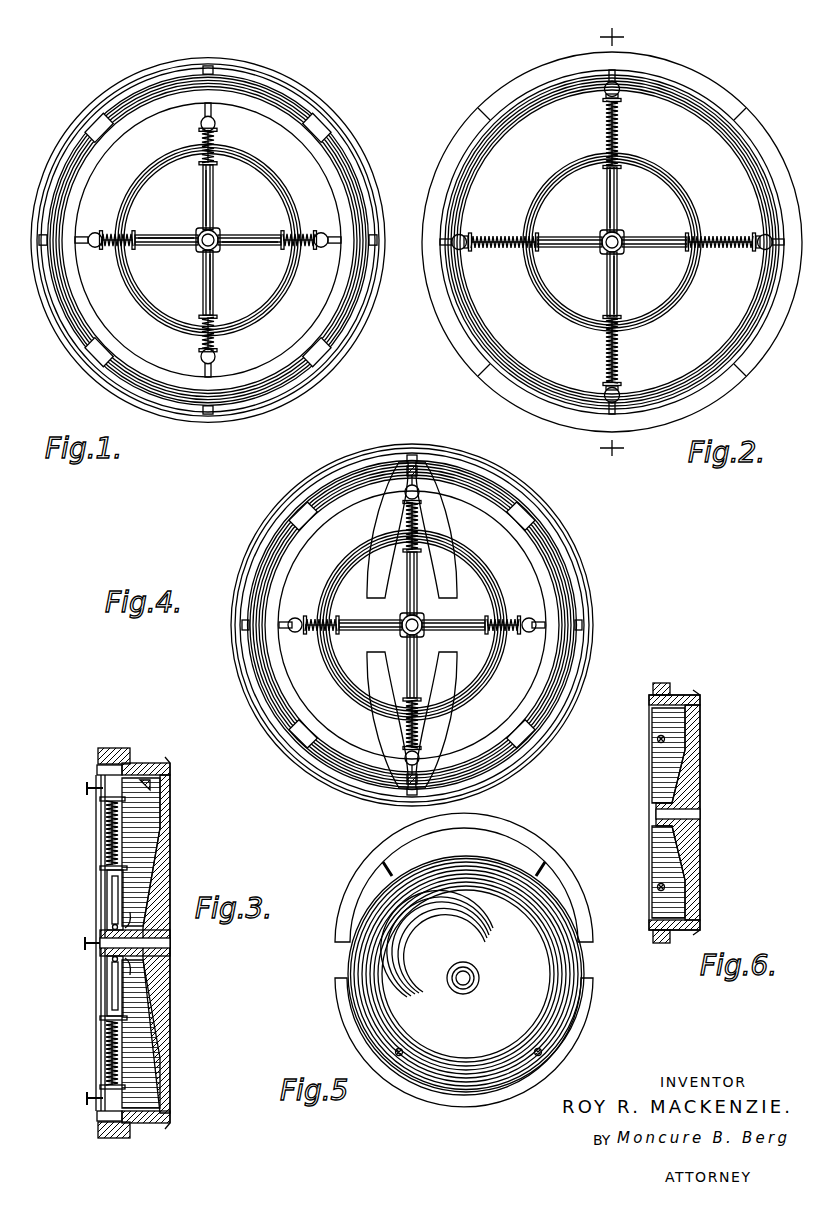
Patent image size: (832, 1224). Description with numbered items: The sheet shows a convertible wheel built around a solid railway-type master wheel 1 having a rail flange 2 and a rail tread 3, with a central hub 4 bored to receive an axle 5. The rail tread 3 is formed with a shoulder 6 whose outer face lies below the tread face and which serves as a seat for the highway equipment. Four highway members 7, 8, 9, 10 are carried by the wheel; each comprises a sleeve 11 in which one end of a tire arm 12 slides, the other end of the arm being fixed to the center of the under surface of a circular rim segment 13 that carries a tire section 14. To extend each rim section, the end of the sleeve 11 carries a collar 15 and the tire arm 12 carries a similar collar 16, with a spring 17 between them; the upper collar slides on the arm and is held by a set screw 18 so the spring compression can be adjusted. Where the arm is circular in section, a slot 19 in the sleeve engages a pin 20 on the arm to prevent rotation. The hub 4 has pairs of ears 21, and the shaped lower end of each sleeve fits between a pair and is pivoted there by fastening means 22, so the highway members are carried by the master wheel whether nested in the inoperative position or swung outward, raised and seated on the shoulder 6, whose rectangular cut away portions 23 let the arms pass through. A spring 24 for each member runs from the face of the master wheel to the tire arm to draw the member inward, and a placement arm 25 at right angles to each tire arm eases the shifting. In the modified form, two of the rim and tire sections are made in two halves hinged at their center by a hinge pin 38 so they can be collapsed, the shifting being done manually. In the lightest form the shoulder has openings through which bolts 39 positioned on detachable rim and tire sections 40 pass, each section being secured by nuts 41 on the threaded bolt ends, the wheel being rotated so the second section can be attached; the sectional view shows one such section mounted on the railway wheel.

In FIG. 3, the master wheel 1 is at (171, 832).
In FIG. 1, the rail flange 2 is at (98, 88).
In FIG. 4, the rail flange 2 is at (592, 600).
In FIG. 3, the rail flange 2 is at (172, 765).
In FIG. 1, the rail tread 3 is at (262, 76).
In FIG. 2, the rail tread 3 is at (612, 243).
In FIG. 4, the rail tread 3 is at (582, 566).
In FIG. 3, the rail tread 3 is at (145, 763).
In FIG. 3, the hub 4 is at (130, 972).
In FIG. 3, the axle 5 is at (171, 944).
In FIG. 1, the shoulder 6 is at (275, 82).
In FIG. 6, the shoulder 6 is at (652, 706).
In FIG. 1, the highway member 7 is at (214, 183).
In FIG. 2, the highway member 7 is at (606, 192).
In FIG. 4, the highway member 7 is at (408, 586).
In FIG. 1, the highway member 8 is at (152, 236).
In FIG. 2, the highway member 8 is at (560, 238).
In FIG. 1, the highway member 9 is at (200, 290).
In FIG. 2, the highway member 9 is at (606, 292).
In FIG. 4, the highway member 9 is at (416, 668).
In FIG. 1, the highway member 10 is at (262, 236).
In FIG. 2, the highway member 10 is at (660, 237).
In FIG. 1, the sleeve 11 is at (240, 243).
In FIG. 2, the sleeve 11 is at (618, 190).
In FIG. 2, the tire arm 12 is at (622, 116).
In FIG. 3, the rim segment 13 is at (96, 770).
In FIG. 1, the tire section 14 is at (165, 95).
In FIG. 2, the tire section 14 is at (705, 90).
In FIG. 3, the tire section 14 is at (110, 748).
In FIG. 2, the collar 15 is at (626, 170).
In FIG. 3, the collar 15 is at (100, 868).
In FIG. 2, the collar 16 is at (622, 101).
In FIG. 3, the collar 16 is at (102, 801).
In FIG. 2, the spring 17 is at (604, 136).
In FIG. 3, the spring 17 is at (106, 845).
In FIG. 2, the set screw 18 is at (604, 104).
In FIG. 3, the slot 19 is at (108, 905).
In FIG. 3, the pin 20 is at (112, 895).
In FIG. 1, the ears 21 is at (218, 236).
In FIG. 2, the ears 21 is at (602, 250).
In FIG. 3, the fastening means 22 is at (112, 927).
In FIG. 1, the cut away portions 23 is at (210, 63).
In FIG. 4, the cut away portions 23 is at (585, 624).
In FIG. 3, the cut away portions 23 is at (99, 778).
In FIG. 3, the spring 24 is at (147, 786).
In FIG. 1, the placement arm 25 is at (218, 125).
In FIG. 2, the placement arm 25 is at (618, 91).
In FIG. 4, the placement arm 25 is at (420, 492).
In FIG. 3, the placement arm 25 is at (88, 790).
In FIG. 4, the hinge pin 38 is at (416, 470).
In FIG. 5, the bolt 39 is at (392, 867).
In FIG. 6, the bolt 39 is at (660, 743).
In FIG. 5, the rim and tire section 40 is at (515, 836).
In FIG. 6, the rim and tire section 40 is at (663, 683).
In FIG. 5, the nut 41 is at (405, 1055).
In FIG. 6, the nut 41 is at (658, 741).